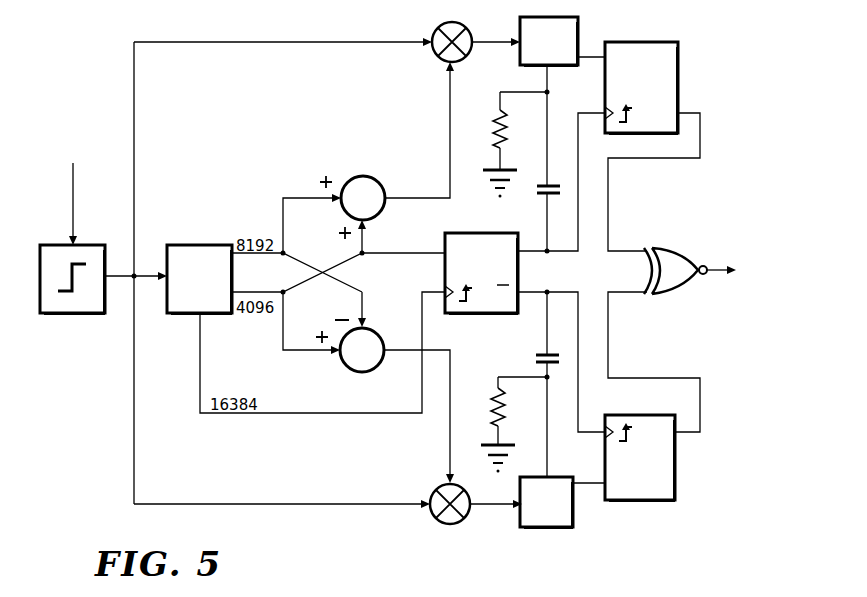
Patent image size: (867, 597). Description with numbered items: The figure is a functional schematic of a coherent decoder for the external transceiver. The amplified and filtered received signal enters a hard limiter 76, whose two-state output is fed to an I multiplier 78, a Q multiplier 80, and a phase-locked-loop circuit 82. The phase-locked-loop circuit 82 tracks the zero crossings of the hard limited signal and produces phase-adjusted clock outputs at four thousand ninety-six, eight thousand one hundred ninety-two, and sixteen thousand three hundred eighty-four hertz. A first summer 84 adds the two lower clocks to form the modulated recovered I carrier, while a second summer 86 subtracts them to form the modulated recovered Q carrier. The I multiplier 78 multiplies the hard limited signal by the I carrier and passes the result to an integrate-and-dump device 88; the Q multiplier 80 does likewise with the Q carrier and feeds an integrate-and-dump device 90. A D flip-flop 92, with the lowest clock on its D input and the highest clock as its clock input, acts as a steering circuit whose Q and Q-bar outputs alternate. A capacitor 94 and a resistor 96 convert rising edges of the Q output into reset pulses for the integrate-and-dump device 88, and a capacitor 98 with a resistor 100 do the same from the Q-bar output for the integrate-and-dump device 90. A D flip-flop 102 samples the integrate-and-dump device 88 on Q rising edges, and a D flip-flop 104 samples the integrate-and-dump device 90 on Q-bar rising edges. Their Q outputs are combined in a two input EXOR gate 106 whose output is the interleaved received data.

The hard limiter 76 is at (84, 245).
The I multiplier 78 is at (464, 30).
The Q multiplier 80 is at (462, 520).
The phase-locked-loop circuit 82 is at (203, 245).
The first summer 84 is at (379, 185).
The second summer 86 is at (378, 366).
The integrate-and-dump device 88 is at (579, 32).
The integrate-and-dump device 90 is at (560, 530).
The D flip-flop 92 is at (522, 278).
The capacitor 94 is at (545, 195).
The resistor 96 is at (497, 124).
The capacitor 98 is at (540, 357).
The resistor 100 is at (494, 408).
The D flip-flop 102 is at (641, 42).
The D flip-flop 104 is at (646, 500).
The two input EXOR gate 106 is at (683, 236).